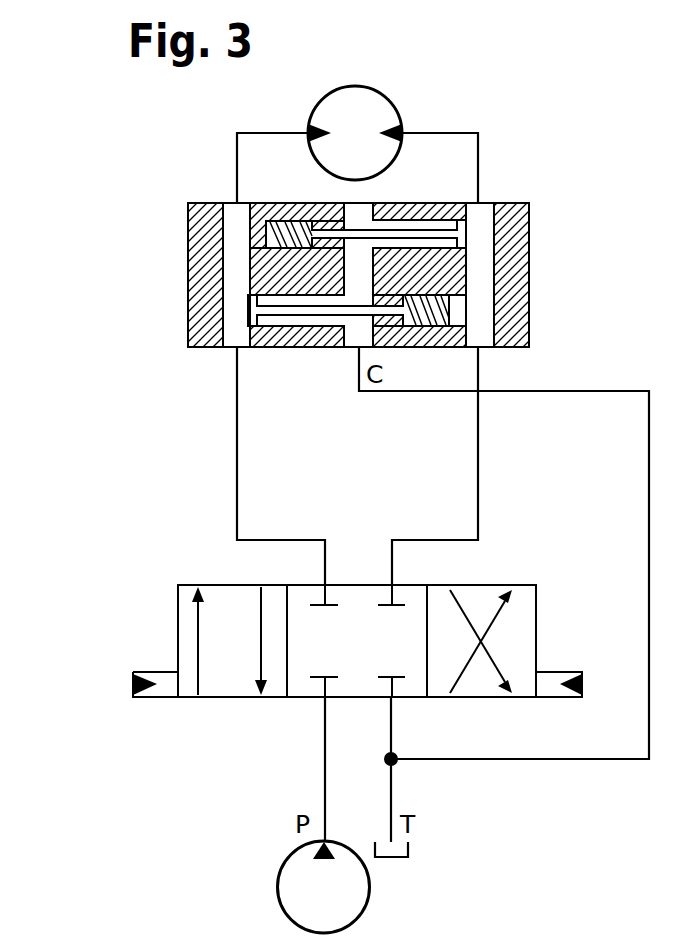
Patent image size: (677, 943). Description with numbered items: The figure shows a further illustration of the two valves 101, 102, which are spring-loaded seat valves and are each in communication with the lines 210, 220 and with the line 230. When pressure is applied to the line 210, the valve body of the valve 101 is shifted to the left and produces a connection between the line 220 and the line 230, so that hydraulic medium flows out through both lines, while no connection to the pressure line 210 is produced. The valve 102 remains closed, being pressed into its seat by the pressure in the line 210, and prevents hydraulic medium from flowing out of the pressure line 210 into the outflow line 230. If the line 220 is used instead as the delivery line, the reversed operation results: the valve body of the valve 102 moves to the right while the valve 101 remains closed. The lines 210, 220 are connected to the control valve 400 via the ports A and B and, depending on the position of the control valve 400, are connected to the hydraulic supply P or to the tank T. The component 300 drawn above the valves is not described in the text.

The hydraulic motor 300 is at (398, 115).
The second piston rod 102 is at (398, 232).
The first piston rod 101 is at (322, 313).
The first port chamber 220 is at (232, 273).
The second port chamber 210 is at (480, 250).
The return line C 230 is at (417, 393).
The directional control valve 400 is at (523, 585).